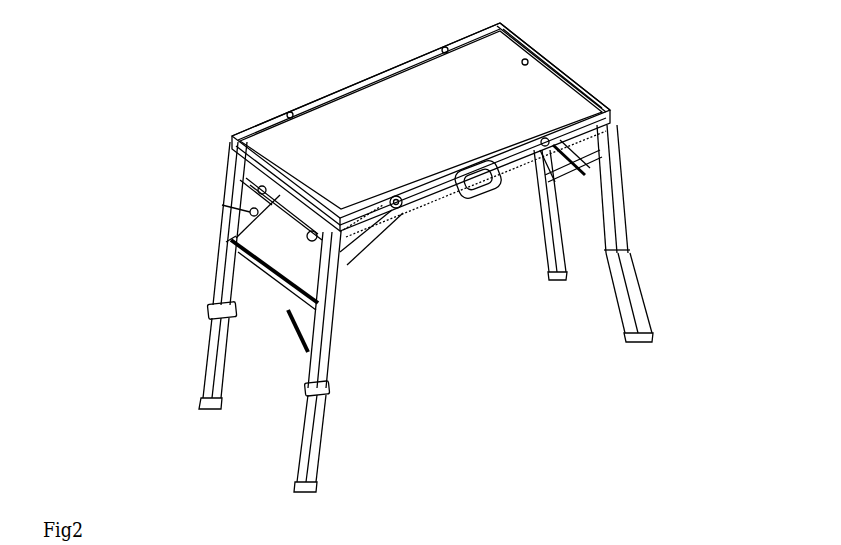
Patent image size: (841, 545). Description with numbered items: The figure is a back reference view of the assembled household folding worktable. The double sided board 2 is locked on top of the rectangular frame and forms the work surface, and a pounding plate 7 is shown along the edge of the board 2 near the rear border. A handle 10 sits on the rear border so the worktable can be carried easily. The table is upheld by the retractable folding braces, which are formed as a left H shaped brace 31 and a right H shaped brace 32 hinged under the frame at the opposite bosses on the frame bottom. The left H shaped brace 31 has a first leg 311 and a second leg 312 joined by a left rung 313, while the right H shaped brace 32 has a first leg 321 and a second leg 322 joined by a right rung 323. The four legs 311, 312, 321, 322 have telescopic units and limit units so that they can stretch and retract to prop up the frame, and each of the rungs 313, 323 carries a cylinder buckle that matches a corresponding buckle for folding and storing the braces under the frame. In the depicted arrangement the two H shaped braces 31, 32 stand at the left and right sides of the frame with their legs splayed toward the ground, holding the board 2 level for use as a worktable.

The double sided board 2 is at (473, 124).
The pounding plate 7 is at (523, 67).
The handle 10 is at (477, 183).
The left "H" shaped brace 31 is at (607, 268).
The first leg of the left "H" shaped brace 311 is at (625, 240).
The second leg of the left "H" shaped brace 312 is at (562, 230).
The left rung 313 is at (567, 168).
The right "H" shaped brace 32 is at (290, 342).
The first leg of the right "H" shaped support frame 321 is at (323, 370).
The second leg of the right "H" shaped support frame 322 is at (208, 386).
The right rung 323 is at (276, 284).